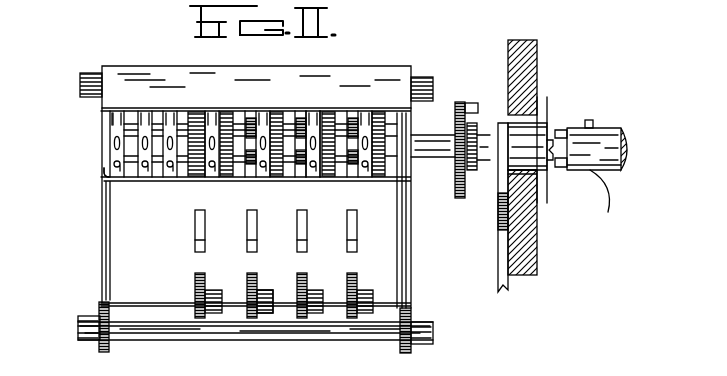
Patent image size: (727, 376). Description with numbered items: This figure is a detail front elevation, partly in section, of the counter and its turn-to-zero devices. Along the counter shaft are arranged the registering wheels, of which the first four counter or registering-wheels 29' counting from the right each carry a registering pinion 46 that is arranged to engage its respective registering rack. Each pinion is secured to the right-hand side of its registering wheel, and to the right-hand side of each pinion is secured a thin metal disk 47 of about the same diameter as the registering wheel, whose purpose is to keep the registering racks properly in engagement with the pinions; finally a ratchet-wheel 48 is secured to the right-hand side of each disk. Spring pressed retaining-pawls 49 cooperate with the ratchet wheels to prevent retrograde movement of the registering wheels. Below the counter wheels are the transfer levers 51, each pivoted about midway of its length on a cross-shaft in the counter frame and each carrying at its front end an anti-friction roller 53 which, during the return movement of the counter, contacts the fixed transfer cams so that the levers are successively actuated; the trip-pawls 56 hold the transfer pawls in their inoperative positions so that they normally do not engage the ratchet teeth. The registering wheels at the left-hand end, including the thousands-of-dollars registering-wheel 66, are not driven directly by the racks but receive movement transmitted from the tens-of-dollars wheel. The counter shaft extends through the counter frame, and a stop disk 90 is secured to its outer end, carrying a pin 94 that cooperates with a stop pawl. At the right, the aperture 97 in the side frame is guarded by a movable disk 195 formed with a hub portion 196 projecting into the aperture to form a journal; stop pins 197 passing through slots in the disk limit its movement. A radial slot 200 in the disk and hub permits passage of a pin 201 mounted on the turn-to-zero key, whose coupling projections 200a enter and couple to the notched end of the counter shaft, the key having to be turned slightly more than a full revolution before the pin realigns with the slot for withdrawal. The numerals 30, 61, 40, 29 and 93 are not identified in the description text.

The journal bearing 30 is at (80, 83).
The thousands-of-dollars registering-wheel 66 is at (142, 128).
The housing flange 61 is at (106, 160).
The retaining-pawl 49 is at (178, 110).
The counter or registering-wheel 29' is at (259, 93).
The registering pinion 46 is at (278, 110).
The gear wheel 40 is at (327, 112).
The ratchet-wheel 48 is at (180, 172).
The thin metal disk 47 is at (310, 168).
The frame 29 is at (147, 247).
The trip-pawl 56 is at (247, 243).
The transfer lever 51 is at (247, 284).
The anti-friction roller 53 is at (262, 292).
The stop disk 90 is at (460, 198).
The wall 93 is at (498, 232).
The pin 94 is at (478, 108).
The aperture 97 is at (527, 120).
The radial slot 200 is at (523, 127).
The stop pin 197 is at (555, 127).
The pin 201 is at (594, 125).
The hub portion 196 is at (550, 172).
The movable disk 195 is at (548, 203).
The coupling projections 200a is at (581, 200).